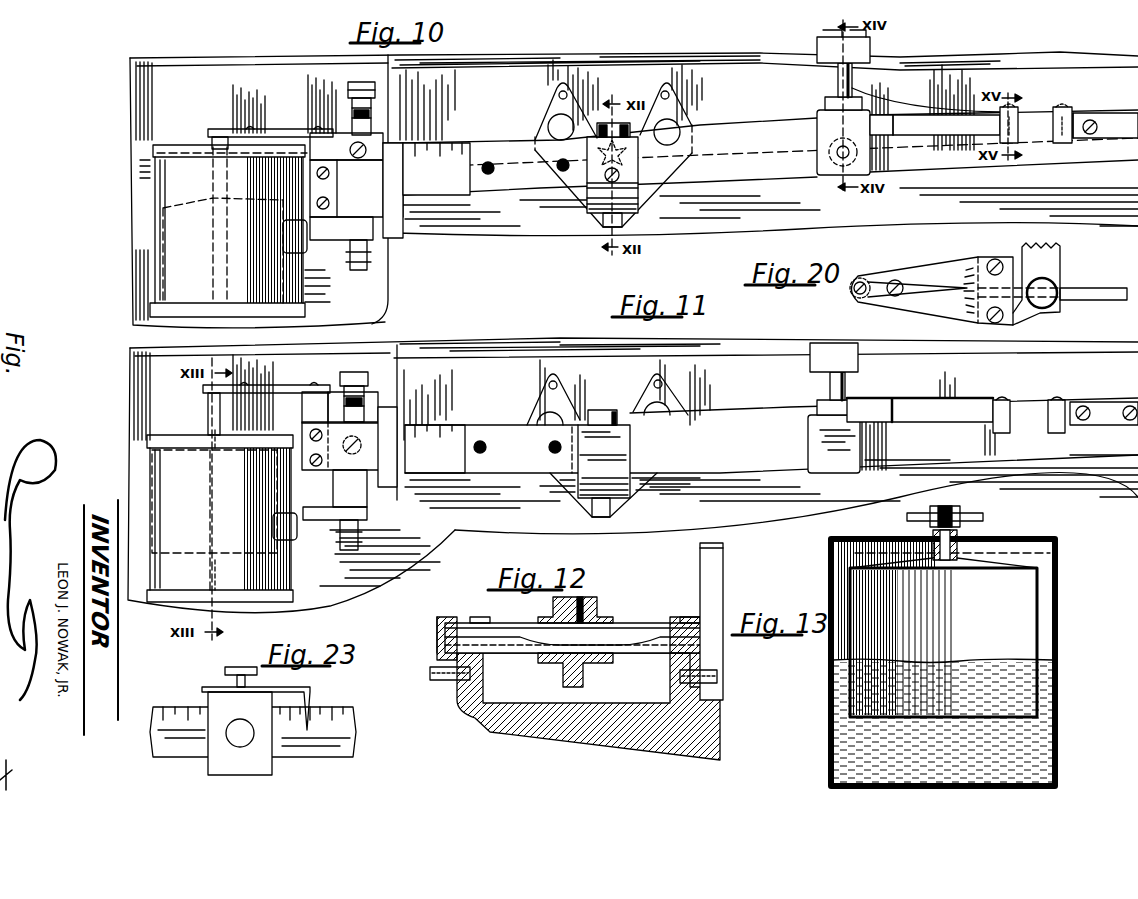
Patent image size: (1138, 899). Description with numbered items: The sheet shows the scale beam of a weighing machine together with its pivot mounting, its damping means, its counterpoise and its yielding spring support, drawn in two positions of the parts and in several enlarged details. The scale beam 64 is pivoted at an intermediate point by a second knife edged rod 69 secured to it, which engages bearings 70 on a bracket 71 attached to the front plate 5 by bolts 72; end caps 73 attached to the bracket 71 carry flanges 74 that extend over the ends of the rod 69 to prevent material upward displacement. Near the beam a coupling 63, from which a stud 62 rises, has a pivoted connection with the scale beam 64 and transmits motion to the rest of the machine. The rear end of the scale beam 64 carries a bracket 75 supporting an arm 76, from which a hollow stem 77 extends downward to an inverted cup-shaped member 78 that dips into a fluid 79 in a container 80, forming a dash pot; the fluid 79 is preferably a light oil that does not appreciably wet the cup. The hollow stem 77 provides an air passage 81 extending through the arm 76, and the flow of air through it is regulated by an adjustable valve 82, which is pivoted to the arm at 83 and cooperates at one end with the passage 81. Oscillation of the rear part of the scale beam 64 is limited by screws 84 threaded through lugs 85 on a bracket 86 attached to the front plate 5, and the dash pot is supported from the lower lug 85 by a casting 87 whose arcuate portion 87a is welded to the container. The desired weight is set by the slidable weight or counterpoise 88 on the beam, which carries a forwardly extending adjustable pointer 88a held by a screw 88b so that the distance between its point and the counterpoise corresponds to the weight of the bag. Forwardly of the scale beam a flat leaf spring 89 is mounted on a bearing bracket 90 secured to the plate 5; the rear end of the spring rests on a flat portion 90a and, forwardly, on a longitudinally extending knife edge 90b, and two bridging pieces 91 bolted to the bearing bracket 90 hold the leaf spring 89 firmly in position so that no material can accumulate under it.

In FIG. 10, the front plate 5 is at (1098, 224).
In FIG. 11, the front plate 5 is at (1097, 495).
In FIG. 10, the stud 62 is at (840, 75).
In FIG. 11, the stud 62 is at (845, 380).
In FIG. 10, the coupling 63 is at (820, 125).
In FIG. 11, the coupling 63 is at (830, 450).
In FIG. 10, the scale beam 64 is at (778, 166).
In FIG. 11, the scale beam 64 is at (750, 461).
In FIG. 12, the scale beam 64 is at (597, 617).
In FIG. 23, the scale beam 64 is at (353, 750).
In FIG. 12, the second knife edged rod 69 is at (650, 640).
In FIG. 12, the bearings 70 is at (478, 660).
In FIG. 10, the bracket 71 is at (590, 203).
In FIG. 11, the bracket 71 is at (583, 486).
In FIG. 12, the bracket 71 is at (562, 728).
In FIG. 10, the bolts 72 is at (560, 125).
In FIG. 11, the bolts 72 is at (552, 408).
In FIG. 12, the bolts 72 is at (705, 608).
In FIG. 12, the end caps 73 is at (455, 625).
In FIG. 12, the flanges 74 is at (480, 620).
In FIG. 10, the bracket 75 is at (340, 112).
In FIG. 11, the bracket 75 is at (318, 416).
In FIG. 10, the arm 76 is at (315, 133).
In FIG. 20, the arm 76 is at (948, 314).
In FIG. 11, the arm 76 is at (305, 392).
In FIG. 10, the hollow stem 77 is at (212, 140).
In FIG. 11, the hollow stem 77 is at (212, 408).
In FIG. 13, the hollow stem 77 is at (960, 534).
In FIG. 10, the inverted cup-shaped member 78 is at (165, 226).
In FIG. 11, the inverted cup-shaped member 78 is at (152, 480).
In FIG. 13, the inverted cup-shaped member 78 is at (1040, 598).
In FIG. 13, the fluid 79 is at (1045, 730).
In FIG. 13, the container 80 is at (1057, 648).
In FIG. 20, the air passage 81 is at (852, 295).
In FIG. 13, the air passage 81 is at (930, 535).
In FIG. 10, the adjustable valve 82 is at (235, 130).
In FIG. 20, the adjustable valve 82 is at (920, 285).
In FIG. 11, the adjustable valve 82 is at (287, 385).
In FIG. 20, the pivot 83 is at (895, 281).
In FIG. 10, the screws 84 is at (362, 82).
In FIG. 11, the screws 84 is at (352, 372).
In FIG. 10, the lugs 85 is at (375, 110).
In FIG. 11, the lugs 85 is at (360, 514).
In FIG. 10, the bracket 86 is at (383, 143).
In FIG. 11, the bracket 86 is at (340, 486).
In FIG. 11, the casting 87 is at (298, 528).
In FIG. 11, the arcuate portion 87a is at (270, 528).
In FIG. 10, the slidable weight 88 is at (400, 190).
In FIG. 11, the slidable weight 88 is at (398, 416).
In FIG. 23, the slidable weight 88 is at (272, 774).
In FIG. 23, the adjustable pointer 88a is at (310, 695).
In FIG. 23, the screw 88b is at (228, 672).
In FIG. 10, the flat leaf spring 89 is at (893, 112).
In FIG. 11, the flat leaf spring 89 is at (928, 402).
In FIG. 10, the bearing bracket 90 is at (1112, 128).
In FIG. 11, the bearing bracket 90 is at (1096, 418).
In FIG. 10, the flat portion 90a is at (1078, 116).
In FIG. 10, the knife edge 90b is at (893, 130).
In FIG. 10, the bridging pieces 91 is at (1064, 107).
In FIG. 11, the bridging pieces 91 is at (1058, 400).